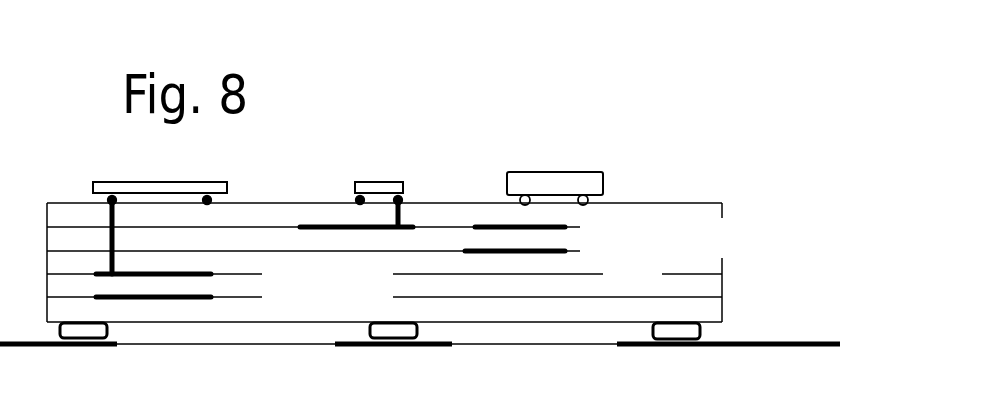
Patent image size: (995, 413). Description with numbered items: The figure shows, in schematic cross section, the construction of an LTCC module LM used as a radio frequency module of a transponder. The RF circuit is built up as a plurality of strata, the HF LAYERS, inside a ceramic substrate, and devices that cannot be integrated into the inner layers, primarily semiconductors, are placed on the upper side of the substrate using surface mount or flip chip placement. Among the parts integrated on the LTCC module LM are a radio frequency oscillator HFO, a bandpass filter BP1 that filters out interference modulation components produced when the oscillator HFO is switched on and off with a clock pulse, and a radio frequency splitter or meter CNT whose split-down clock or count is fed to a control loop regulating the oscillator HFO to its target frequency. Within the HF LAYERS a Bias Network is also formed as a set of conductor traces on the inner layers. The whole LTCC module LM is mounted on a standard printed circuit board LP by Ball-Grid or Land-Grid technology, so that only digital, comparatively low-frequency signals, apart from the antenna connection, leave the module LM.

The LTCC module LM is at (362, 262).
The radio frequency splitter or meter CNT is at (160, 179).
The bandpass filter BP1 is at (380, 191).
The radio frequency oscillator HFO is at (555, 175).
The bias network Bias Network is at (253, 285).
The RF layers HF LAYERS is at (745, 203).
The printed circuit board LP is at (441, 345).